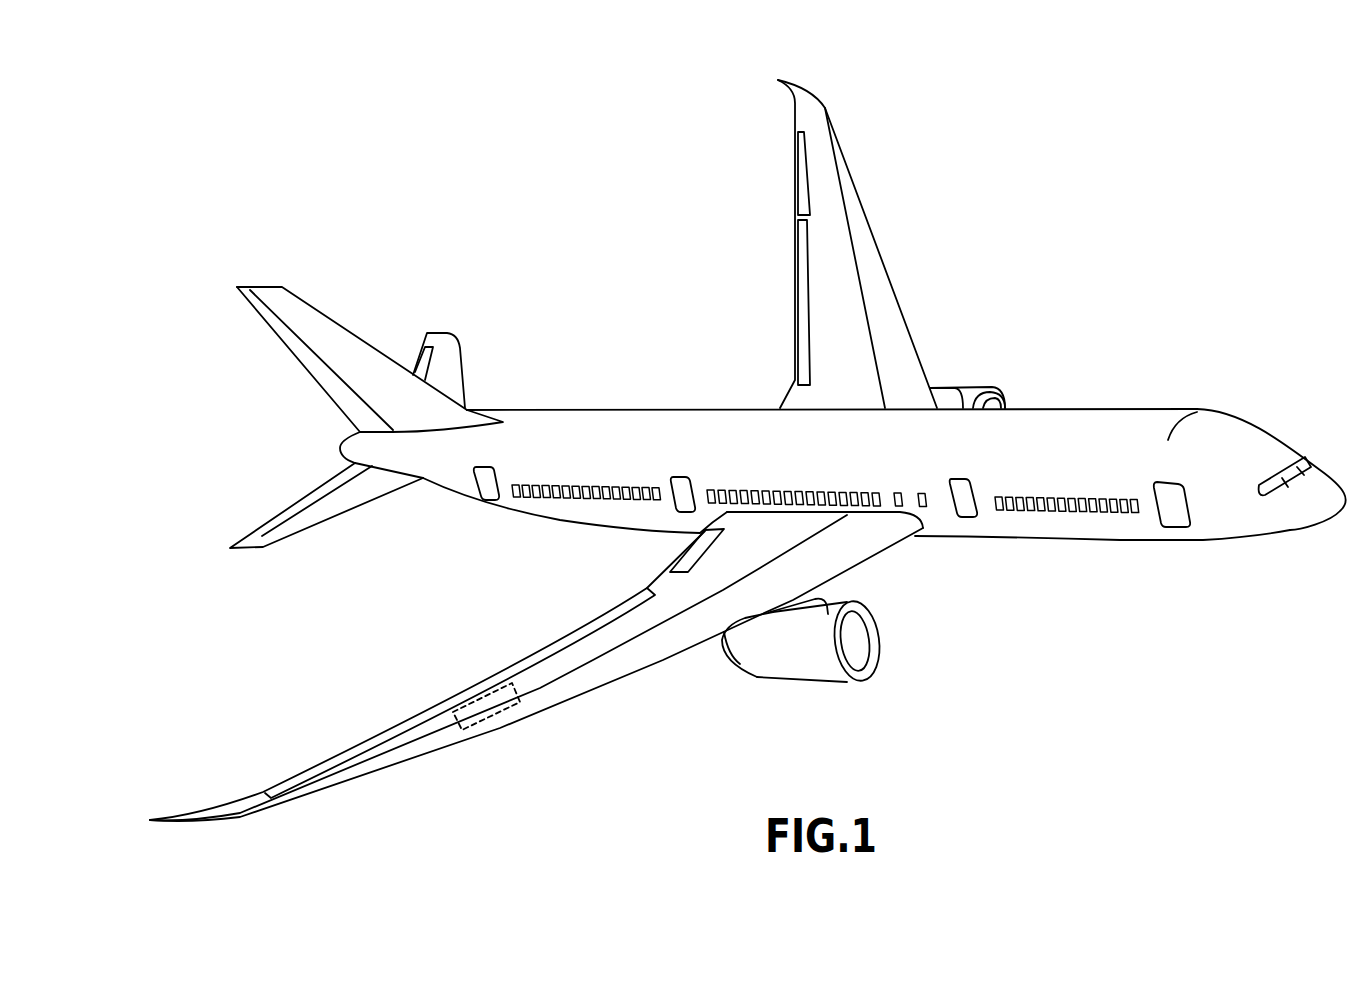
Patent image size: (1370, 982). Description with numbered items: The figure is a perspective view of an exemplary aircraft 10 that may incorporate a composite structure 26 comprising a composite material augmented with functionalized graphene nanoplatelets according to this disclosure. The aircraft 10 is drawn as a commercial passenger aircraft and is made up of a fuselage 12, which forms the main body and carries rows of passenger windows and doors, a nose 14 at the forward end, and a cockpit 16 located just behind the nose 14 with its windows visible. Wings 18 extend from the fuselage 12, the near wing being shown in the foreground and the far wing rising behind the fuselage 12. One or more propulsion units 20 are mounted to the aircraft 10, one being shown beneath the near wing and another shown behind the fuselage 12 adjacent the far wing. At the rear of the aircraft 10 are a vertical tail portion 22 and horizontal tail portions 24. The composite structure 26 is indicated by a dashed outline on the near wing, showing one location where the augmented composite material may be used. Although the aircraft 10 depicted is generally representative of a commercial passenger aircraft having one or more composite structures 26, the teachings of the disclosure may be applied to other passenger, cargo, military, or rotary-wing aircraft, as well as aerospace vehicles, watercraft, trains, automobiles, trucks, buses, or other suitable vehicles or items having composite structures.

The aircraft 10 is at (1130, 222).
The fuselage 12 is at (1068, 418).
The nose 14 is at (1325, 507).
The cockpit 16 is at (1313, 460).
The wings 18 is at (840, 167).
The propulsion units 20 is at (970, 395).
The vertical tail portion 22 is at (330, 340).
The horizontal tail portions 24 is at (447, 370).
The composite structure 26 is at (483, 697).